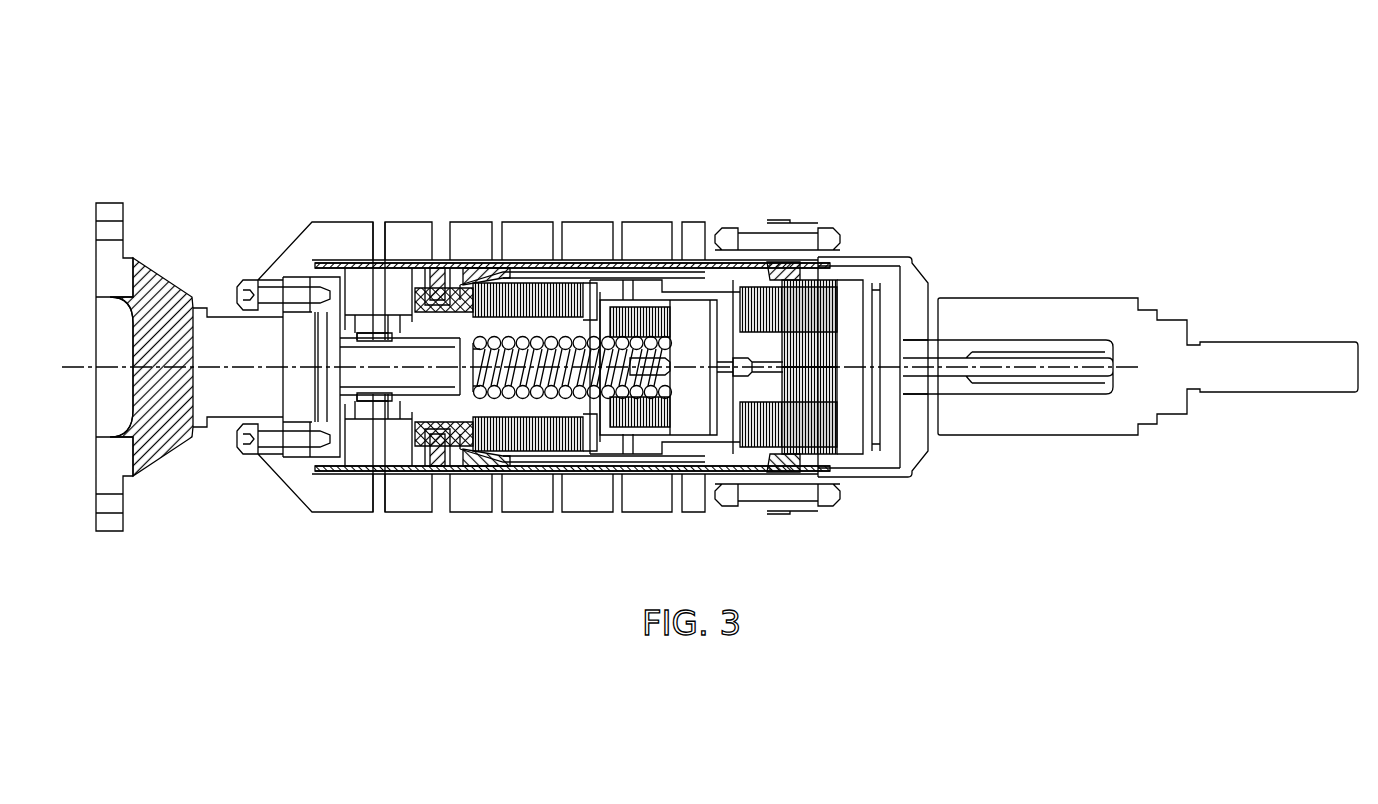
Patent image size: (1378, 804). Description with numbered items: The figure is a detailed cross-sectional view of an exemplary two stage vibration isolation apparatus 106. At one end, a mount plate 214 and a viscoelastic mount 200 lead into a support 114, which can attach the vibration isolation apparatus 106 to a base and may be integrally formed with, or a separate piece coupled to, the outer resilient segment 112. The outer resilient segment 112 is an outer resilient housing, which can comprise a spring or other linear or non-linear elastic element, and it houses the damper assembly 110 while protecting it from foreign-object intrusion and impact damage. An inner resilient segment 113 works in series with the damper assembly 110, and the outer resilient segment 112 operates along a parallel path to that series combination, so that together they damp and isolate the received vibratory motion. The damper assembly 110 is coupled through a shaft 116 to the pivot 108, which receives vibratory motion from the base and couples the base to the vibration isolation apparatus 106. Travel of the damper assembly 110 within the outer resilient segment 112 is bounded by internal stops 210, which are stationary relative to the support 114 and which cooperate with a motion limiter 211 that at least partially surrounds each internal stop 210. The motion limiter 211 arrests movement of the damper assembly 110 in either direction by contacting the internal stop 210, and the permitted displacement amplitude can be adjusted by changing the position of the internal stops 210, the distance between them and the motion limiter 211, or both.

The two stage vibration isolation apparatus 106 is at (643, 136).
The pivot 108 is at (1072, 427).
The damper assembly 110 is at (695, 472).
The outer resilient segment 112 is at (340, 232).
The inner resilient segment 113 is at (360, 445).
The support 114 is at (218, 328).
The shaft 116 is at (956, 385).
The viscoelastic mount 200 is at (163, 283).
The internal stop 210 is at (437, 262).
The motion limiter 211 is at (412, 291).
The mount plate 214 is at (110, 200).